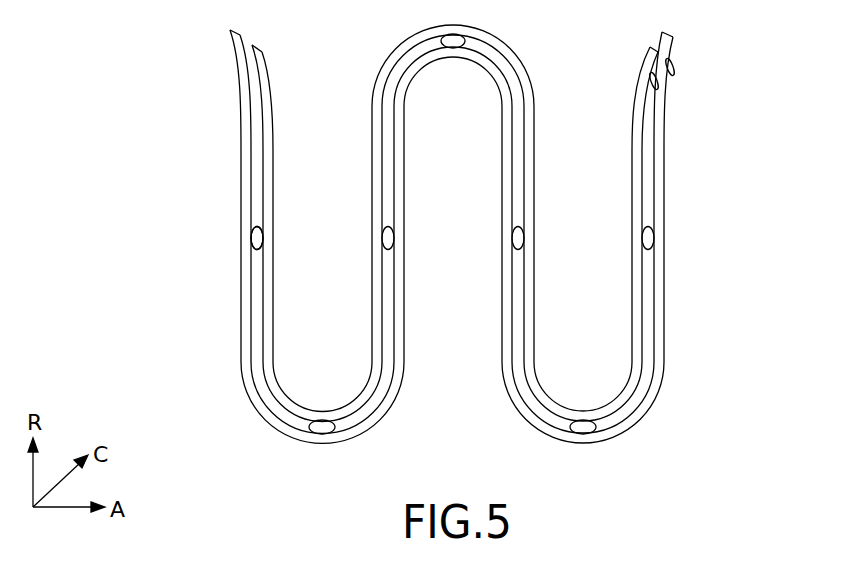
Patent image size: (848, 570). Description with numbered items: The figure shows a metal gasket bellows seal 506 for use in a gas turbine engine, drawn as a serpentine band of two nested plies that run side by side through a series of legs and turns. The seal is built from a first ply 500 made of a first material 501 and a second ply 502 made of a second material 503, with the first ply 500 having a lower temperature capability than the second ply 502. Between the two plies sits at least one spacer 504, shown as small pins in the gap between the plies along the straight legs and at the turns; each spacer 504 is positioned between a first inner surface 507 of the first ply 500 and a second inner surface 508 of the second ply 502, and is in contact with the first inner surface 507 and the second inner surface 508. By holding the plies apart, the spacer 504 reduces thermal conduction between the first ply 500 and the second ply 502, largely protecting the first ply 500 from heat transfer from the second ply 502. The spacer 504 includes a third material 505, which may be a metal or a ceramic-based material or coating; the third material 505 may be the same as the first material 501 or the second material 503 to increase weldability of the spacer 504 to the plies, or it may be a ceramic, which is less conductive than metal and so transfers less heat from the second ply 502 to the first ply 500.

The first ply 500 is at (265, 118).
The first material 501 is at (269, 140).
The second ply 502 is at (236, 98).
The second material 503 is at (242, 137).
The spacer 504 is at (260, 240).
The third material 505 is at (258, 246).
The metal gasket bellows seal 506 is at (395, 234).
The first inner surface 507 is at (655, 70).
The second inner surface 508 is at (671, 77).